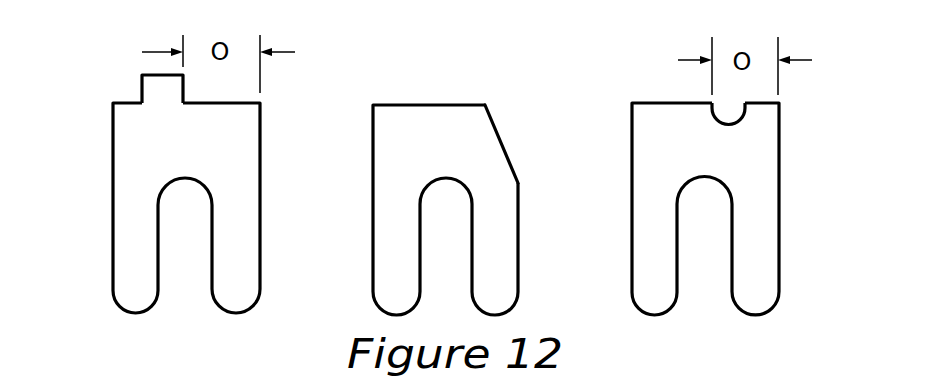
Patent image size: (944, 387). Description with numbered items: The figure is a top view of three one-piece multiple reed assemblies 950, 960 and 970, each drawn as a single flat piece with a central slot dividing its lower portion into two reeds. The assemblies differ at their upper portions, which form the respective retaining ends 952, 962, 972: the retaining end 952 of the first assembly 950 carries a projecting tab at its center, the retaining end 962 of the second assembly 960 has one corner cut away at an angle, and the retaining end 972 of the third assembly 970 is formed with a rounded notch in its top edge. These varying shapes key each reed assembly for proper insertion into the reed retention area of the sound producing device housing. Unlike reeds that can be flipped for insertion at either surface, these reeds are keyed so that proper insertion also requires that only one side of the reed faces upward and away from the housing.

The one-piece multiple reed assembly 950 is at (163, 155).
The retaining end 952 is at (142, 88).
The one-piece multiple reed assembly 960 is at (424, 155).
The retaining end 962 is at (500, 135).
The one-piece multiple reed assembly 970 is at (657, 154).
The retaining end 972 is at (728, 131).